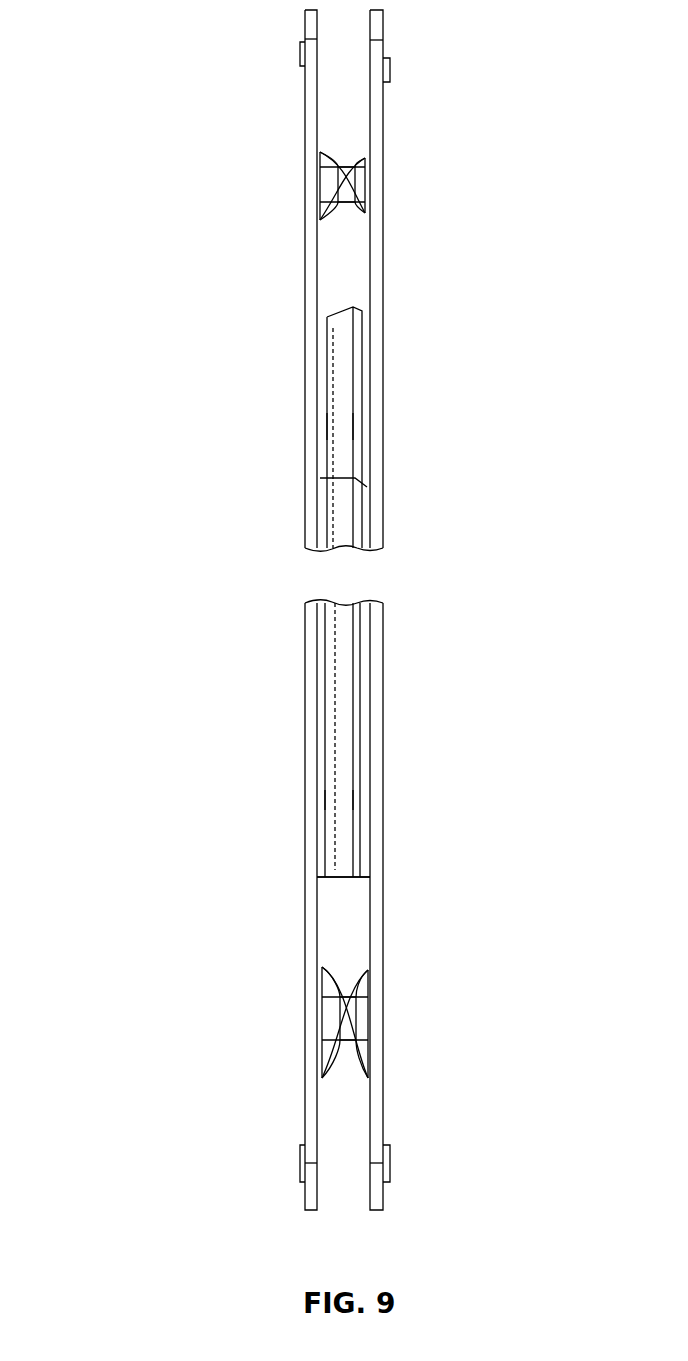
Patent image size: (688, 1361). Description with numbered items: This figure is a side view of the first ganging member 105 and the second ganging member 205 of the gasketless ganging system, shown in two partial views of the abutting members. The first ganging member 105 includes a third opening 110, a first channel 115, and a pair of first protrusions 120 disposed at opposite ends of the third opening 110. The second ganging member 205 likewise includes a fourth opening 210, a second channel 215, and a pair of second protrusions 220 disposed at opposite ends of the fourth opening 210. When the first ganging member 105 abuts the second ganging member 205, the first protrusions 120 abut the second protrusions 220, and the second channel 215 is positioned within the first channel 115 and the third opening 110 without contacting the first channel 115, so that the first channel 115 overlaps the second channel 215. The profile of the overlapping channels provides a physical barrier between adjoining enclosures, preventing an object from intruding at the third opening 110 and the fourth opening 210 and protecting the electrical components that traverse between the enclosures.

The first ganging member 105 is at (305, 26).
The second ganging member 205 is at (383, 33).
The third opening 110 is at (357, 450).
The first channel 115 is at (353, 307).
The first protrusions 120 is at (338, 188).
The fourth opening 210 is at (328, 413).
The second channel 215 is at (333, 328).
The second protrusions 220 is at (355, 185).